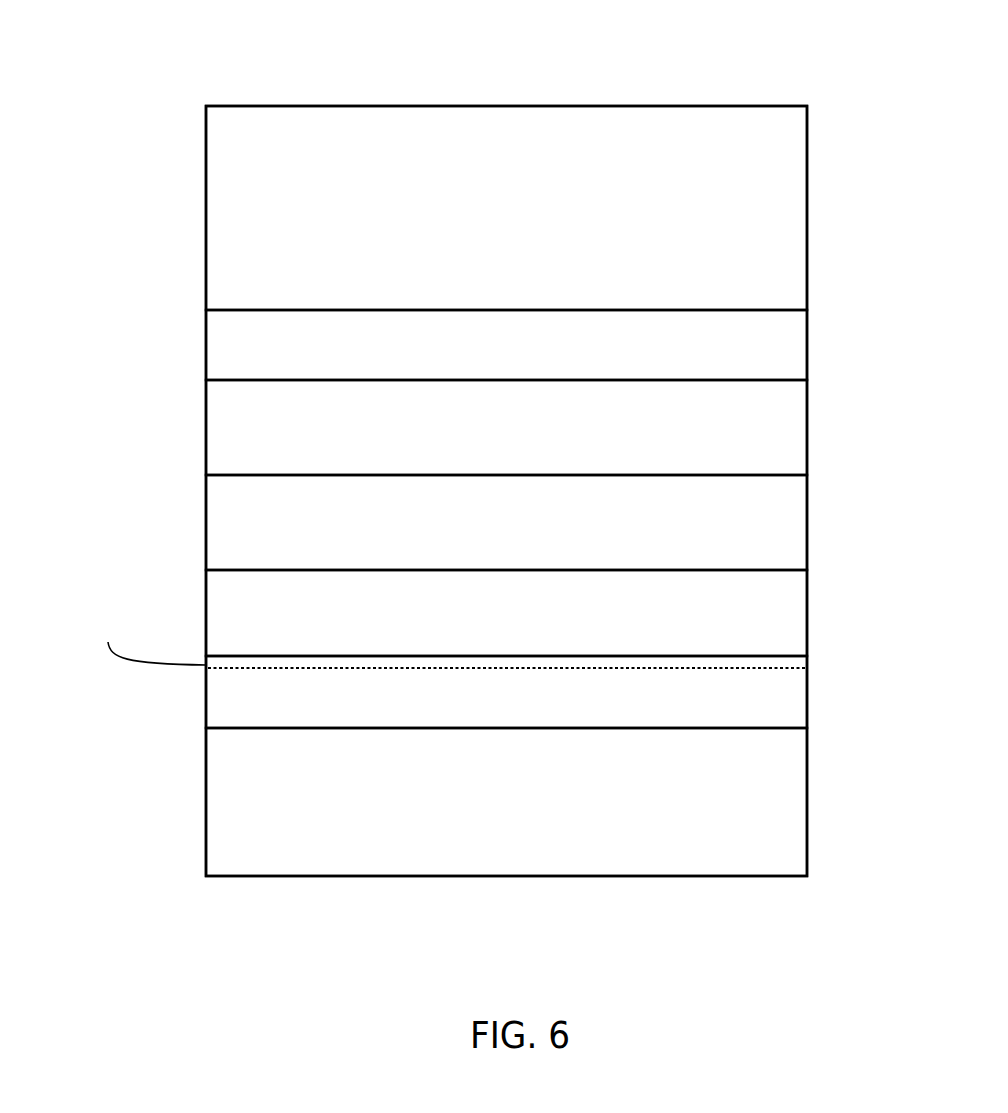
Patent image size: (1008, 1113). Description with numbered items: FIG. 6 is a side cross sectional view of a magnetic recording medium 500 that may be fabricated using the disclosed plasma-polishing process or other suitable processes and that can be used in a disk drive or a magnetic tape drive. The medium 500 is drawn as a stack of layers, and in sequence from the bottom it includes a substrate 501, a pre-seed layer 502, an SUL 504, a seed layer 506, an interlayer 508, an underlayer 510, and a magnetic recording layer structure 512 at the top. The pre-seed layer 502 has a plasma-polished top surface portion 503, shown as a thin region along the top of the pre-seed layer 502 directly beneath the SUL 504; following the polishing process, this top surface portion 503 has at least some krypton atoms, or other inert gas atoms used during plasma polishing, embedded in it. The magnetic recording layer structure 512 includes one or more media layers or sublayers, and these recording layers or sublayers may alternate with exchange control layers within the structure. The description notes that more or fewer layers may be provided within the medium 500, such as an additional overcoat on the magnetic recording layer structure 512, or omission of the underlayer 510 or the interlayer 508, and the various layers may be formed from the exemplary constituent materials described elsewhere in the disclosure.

The magnetic recording medium 500 is at (143, 73).
The substrate 501 is at (808, 826).
The pre-seed layer 502 is at (808, 711).
The plasma-polished top surface portion 503 is at (808, 661).
The SUL 504 is at (808, 601).
The seed layer 506 is at (808, 518).
The interlayer 508 is at (808, 428).
The underlayer 510 is at (808, 334).
The magnetic recording layer structure 512 is at (808, 246).